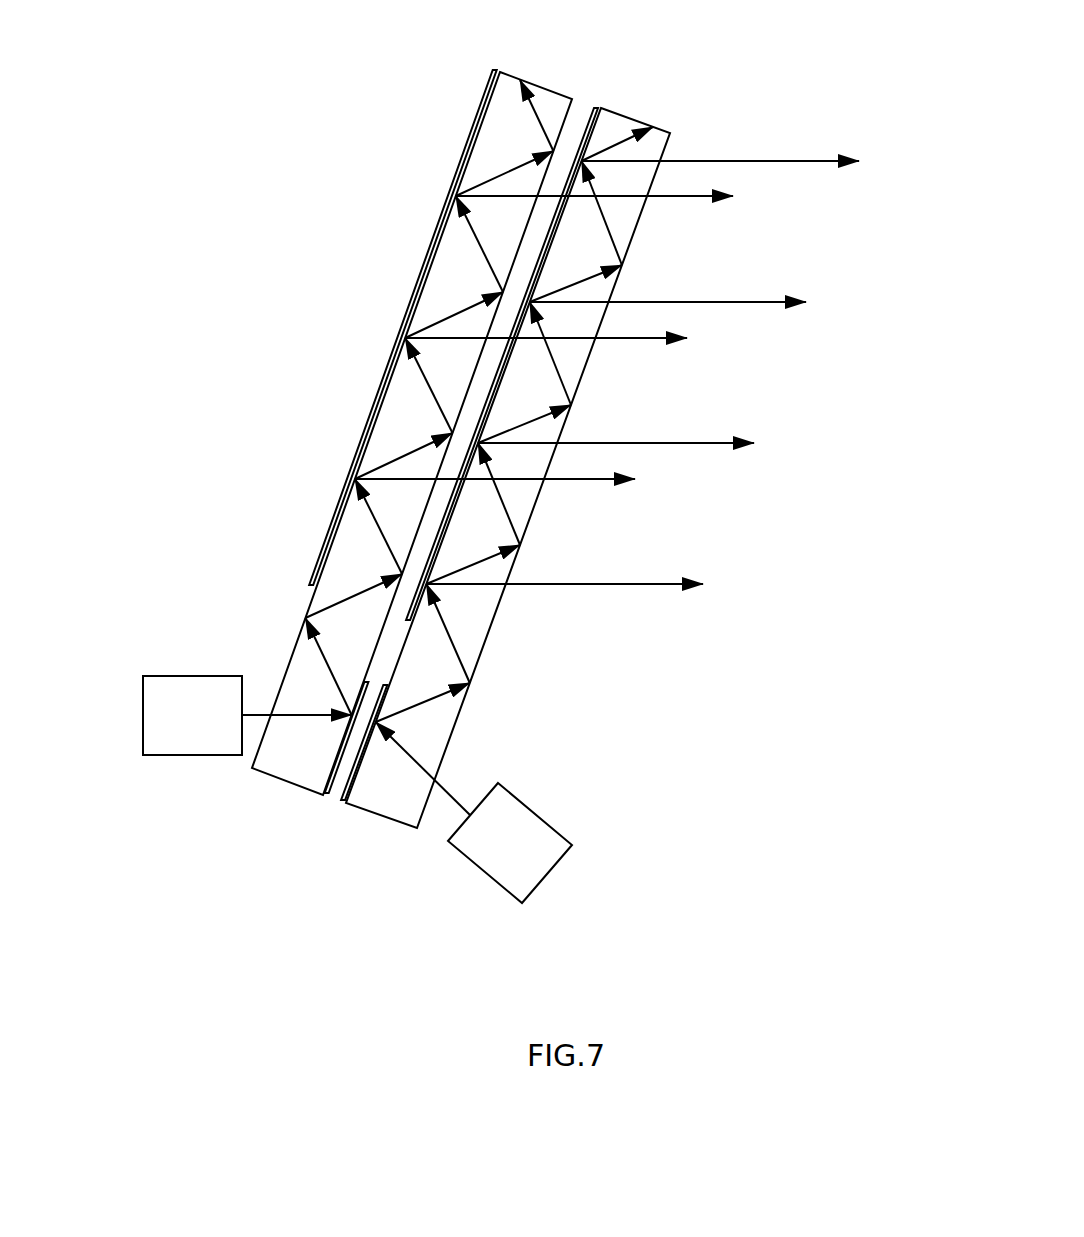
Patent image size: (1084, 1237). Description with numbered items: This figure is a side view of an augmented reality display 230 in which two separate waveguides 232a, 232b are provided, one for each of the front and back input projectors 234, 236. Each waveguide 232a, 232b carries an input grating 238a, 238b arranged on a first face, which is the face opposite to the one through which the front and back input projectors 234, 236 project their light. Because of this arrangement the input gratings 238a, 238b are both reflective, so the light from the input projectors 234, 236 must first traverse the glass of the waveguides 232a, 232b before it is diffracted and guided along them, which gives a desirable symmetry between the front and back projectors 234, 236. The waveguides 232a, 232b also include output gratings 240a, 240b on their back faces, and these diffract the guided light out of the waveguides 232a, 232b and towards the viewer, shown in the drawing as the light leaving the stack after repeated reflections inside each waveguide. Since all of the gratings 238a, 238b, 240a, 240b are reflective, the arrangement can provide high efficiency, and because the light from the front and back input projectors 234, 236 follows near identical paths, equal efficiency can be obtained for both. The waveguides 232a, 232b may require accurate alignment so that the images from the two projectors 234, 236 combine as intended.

The augmented reality display 230 is at (392, 176).
The waveguide 232a is at (632, 116).
The waveguide 232b is at (546, 87).
The front input projector 234 is at (538, 856).
The back input projector 236 is at (216, 736).
The input grating 238a is at (345, 808).
The input grating 238b is at (318, 802).
The output grating 240a is at (495, 380).
The output grating 240b is at (424, 271).